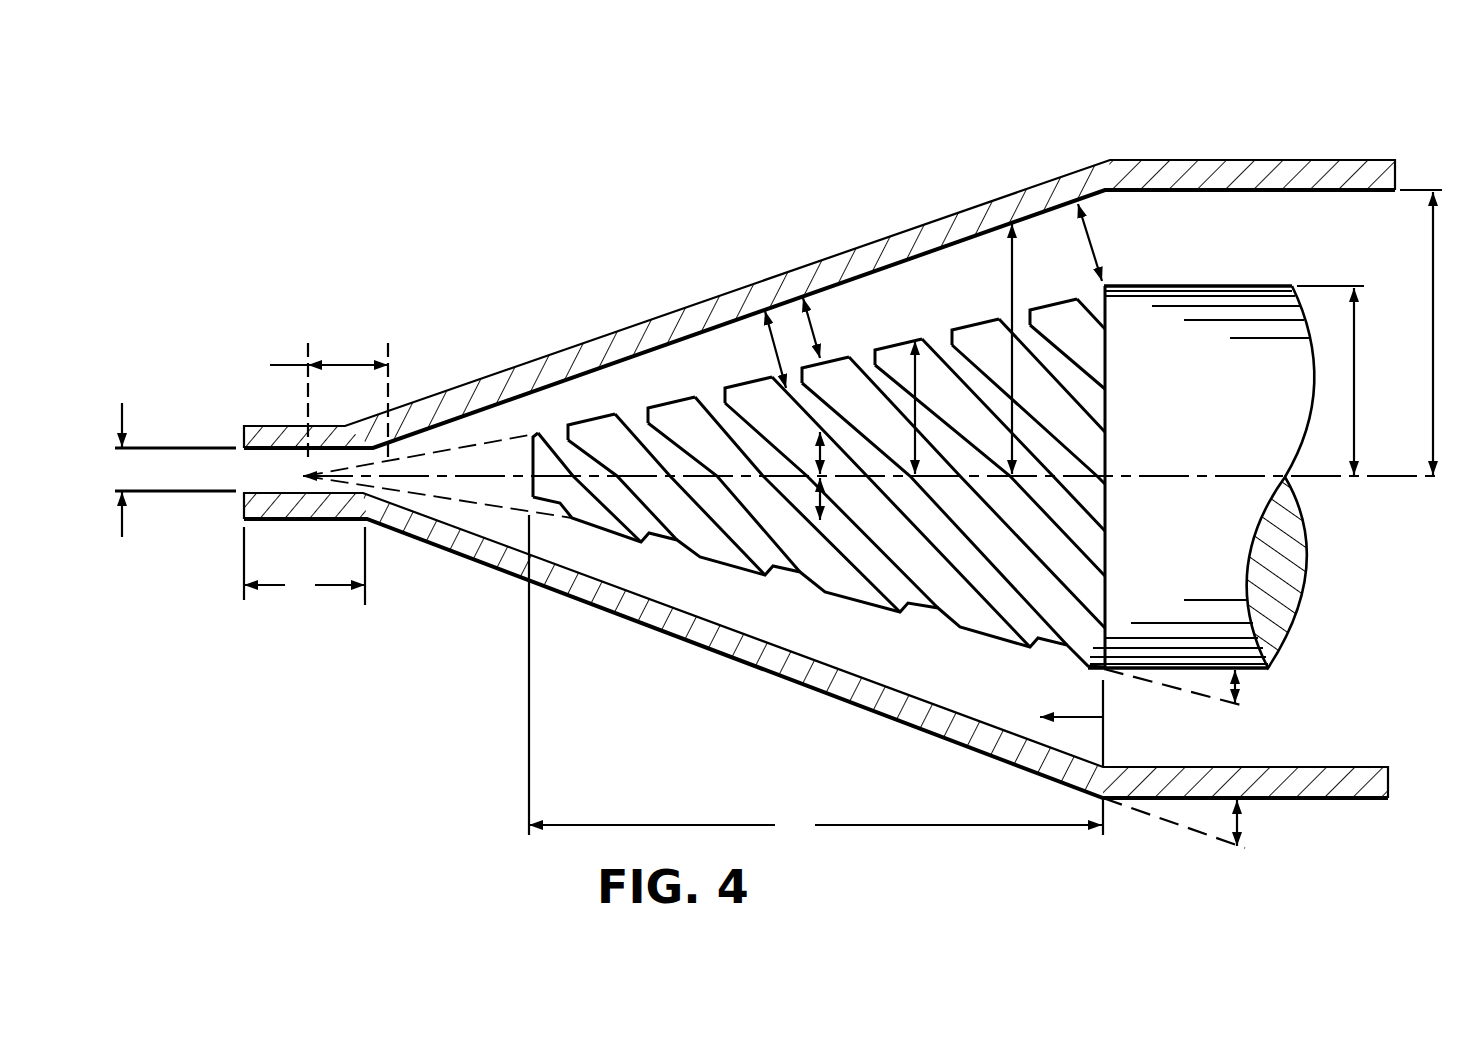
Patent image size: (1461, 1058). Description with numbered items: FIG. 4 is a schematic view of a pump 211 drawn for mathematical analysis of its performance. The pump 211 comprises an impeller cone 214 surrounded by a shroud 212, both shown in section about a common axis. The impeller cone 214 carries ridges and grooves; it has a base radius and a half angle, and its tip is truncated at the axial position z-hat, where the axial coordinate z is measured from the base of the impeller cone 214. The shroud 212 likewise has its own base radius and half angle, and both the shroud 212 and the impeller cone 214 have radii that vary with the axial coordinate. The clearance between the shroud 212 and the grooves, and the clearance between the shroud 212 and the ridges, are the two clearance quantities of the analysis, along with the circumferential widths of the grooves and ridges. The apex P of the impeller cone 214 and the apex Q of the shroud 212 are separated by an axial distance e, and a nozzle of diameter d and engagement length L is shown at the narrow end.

The pump 211 is at (535, 224).
The shroud 212 is at (1173, 160).
The impeller cone 214 is at (1290, 575).